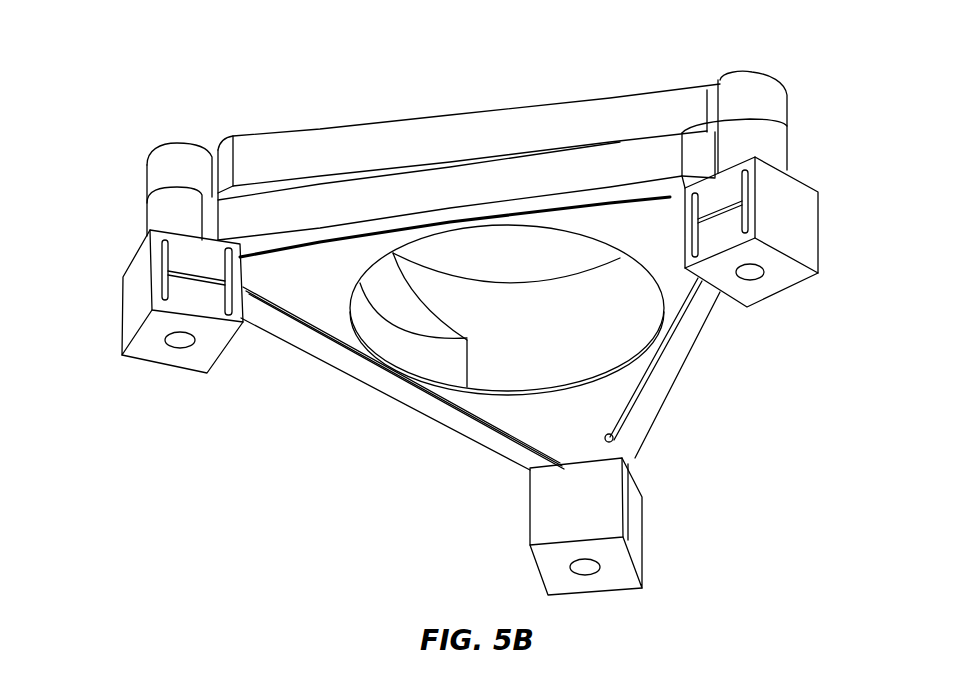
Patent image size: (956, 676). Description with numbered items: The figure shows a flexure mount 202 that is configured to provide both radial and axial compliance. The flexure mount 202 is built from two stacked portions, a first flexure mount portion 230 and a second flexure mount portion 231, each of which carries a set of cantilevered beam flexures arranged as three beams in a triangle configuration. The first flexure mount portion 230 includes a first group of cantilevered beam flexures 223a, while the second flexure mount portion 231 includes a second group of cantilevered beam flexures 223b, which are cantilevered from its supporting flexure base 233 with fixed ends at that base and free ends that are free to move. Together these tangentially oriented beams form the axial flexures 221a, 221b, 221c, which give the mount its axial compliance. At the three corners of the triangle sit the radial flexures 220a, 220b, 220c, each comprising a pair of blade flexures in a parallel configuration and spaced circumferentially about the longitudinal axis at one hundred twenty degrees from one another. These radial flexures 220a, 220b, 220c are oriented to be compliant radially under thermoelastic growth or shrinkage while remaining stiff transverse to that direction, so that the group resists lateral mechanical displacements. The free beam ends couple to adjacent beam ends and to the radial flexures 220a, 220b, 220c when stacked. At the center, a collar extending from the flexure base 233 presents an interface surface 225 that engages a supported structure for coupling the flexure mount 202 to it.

The flexure mount 202 is at (366, 29).
The first flexure mount portion 230 is at (246, 112).
The axial flexure 221a is at (416, 99).
The axial flexure 221b is at (697, 392).
The axial flexure 221c is at (379, 416).
The cantilevered beam flexure 223a is at (465, 137).
The cantilevered beam flexure 223b is at (502, 177).
The radial flexure 220a is at (113, 306).
The radial flexure 220b is at (829, 213).
The radial flexure 220c is at (657, 541).
The interface surface 225 is at (500, 310).
The second flexure mount portion 231 is at (306, 398).
The second flexure base 233 is at (548, 412).